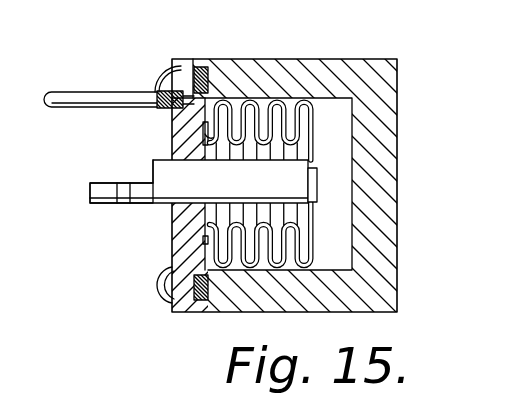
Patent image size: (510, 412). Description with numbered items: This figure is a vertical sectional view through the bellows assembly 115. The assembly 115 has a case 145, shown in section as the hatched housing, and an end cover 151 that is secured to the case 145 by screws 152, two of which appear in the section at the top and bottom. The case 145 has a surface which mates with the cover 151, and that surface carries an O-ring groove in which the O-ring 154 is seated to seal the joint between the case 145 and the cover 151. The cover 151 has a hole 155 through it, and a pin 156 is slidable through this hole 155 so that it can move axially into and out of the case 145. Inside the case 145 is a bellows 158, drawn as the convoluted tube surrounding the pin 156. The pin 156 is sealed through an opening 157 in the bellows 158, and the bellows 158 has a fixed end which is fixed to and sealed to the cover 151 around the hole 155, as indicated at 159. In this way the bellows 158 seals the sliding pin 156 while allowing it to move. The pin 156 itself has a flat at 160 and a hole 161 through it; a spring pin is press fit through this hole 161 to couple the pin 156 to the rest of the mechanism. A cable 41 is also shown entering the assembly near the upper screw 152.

The cable 41 is at (93, 92).
The bellows assembly 115 is at (330, 59).
The case 145 is at (236, 67).
The end cover 151 is at (172, 240).
The screws 152 is at (156, 90).
The O-ring 154 is at (188, 303).
The hole 155 is at (153, 163).
The pin 156 is at (239, 179).
The opening 157 is at (318, 176).
The bellows 158 is at (313, 256).
The fixed end seal 159 is at (200, 240).
The flat 160 is at (100, 183).
The hole 161 is at (125, 182).